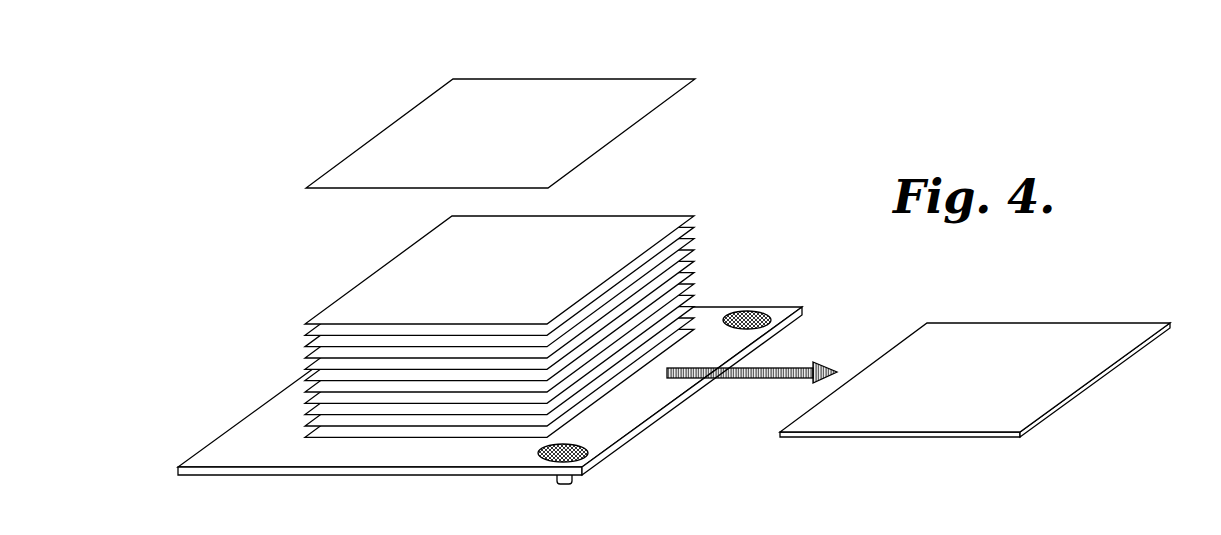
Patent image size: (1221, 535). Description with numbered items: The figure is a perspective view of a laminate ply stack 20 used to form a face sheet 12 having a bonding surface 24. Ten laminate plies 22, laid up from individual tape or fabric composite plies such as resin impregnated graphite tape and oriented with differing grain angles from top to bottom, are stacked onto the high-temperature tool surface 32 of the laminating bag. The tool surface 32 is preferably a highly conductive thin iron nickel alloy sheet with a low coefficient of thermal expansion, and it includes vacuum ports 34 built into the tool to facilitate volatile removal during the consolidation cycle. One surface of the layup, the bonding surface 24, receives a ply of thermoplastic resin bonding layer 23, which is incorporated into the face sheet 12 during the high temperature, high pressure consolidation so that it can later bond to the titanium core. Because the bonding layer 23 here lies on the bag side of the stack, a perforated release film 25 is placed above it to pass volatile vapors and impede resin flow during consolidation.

The face sheet 12 is at (996, 358).
The stack of layers 20 is at (447, 305).
The laminate plies 22 is at (306, 333).
The thermoplastic resin bonding layer 23 is at (646, 216).
The bonding surface 24 is at (1120, 329).
The perforated release film 25 is at (665, 84).
The tool surface 32 is at (384, 455).
The vacuum ports 34 is at (600, 458).